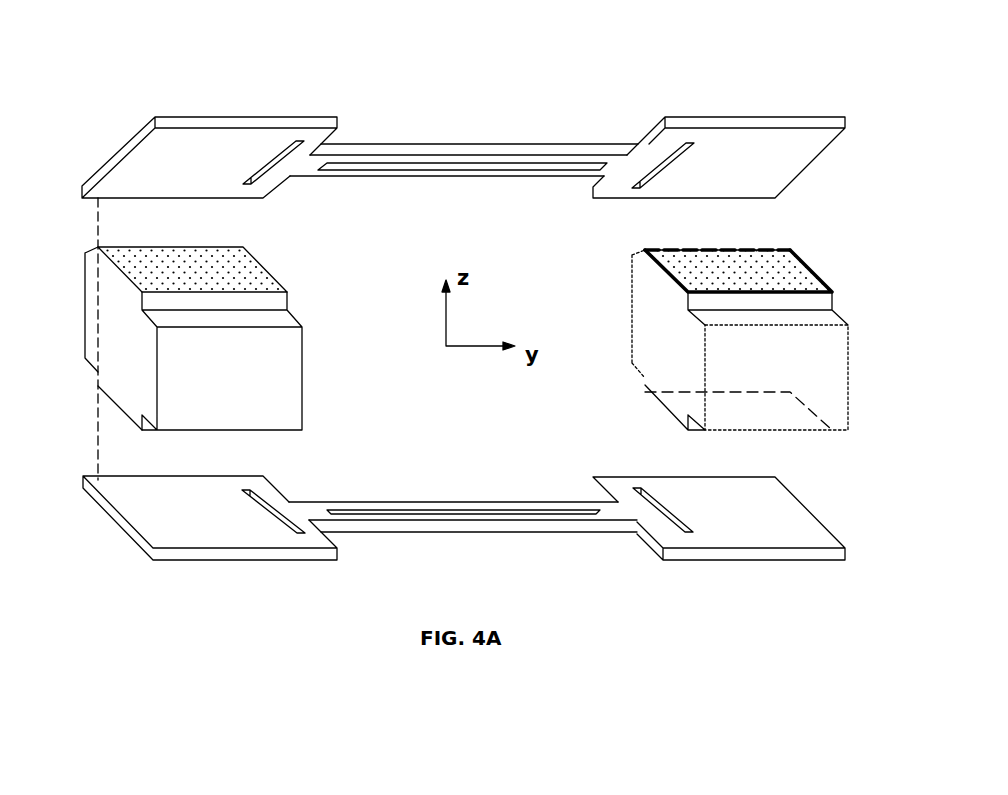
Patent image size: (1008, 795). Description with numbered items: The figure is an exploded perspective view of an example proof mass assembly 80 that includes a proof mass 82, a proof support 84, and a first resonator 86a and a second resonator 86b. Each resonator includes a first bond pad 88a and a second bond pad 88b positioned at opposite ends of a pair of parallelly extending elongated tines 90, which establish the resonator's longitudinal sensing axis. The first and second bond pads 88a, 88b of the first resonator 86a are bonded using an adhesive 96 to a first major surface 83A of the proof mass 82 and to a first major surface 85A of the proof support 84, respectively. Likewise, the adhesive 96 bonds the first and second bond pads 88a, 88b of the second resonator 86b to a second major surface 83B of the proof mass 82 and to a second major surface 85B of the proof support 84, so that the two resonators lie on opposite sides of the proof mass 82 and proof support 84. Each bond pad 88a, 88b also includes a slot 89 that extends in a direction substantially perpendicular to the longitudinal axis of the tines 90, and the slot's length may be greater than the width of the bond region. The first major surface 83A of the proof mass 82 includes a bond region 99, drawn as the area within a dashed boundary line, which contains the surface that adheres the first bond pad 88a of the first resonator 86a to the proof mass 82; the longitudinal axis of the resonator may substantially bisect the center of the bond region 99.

The proof mass assembly 80 is at (826, 50).
The proof mass 82 is at (807, 377).
The first major surface of proof mass 83A is at (771, 260).
The second major surface of proof mass 83B is at (815, 447).
The proof support 84 is at (262, 377).
The first major surface of proof support 85A is at (128, 242).
The second major surface of proof support 85B is at (110, 418).
The first resonator 86a is at (440, 148).
The second resonator 86b is at (425, 530).
The first bond pad 88a is at (784, 171).
The second bond pad 88b is at (214, 181).
The slot 89 is at (267, 170).
The elongated tines 90 is at (533, 172).
The adhesive 96 is at (158, 268).
The bond region 99 is at (818, 279).